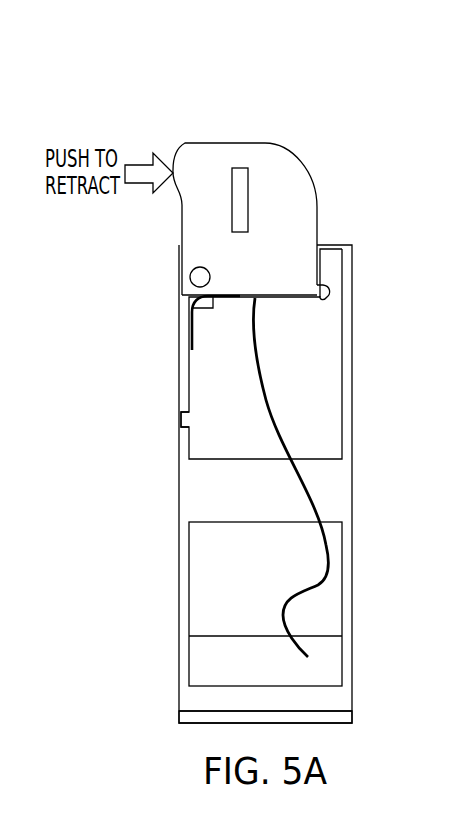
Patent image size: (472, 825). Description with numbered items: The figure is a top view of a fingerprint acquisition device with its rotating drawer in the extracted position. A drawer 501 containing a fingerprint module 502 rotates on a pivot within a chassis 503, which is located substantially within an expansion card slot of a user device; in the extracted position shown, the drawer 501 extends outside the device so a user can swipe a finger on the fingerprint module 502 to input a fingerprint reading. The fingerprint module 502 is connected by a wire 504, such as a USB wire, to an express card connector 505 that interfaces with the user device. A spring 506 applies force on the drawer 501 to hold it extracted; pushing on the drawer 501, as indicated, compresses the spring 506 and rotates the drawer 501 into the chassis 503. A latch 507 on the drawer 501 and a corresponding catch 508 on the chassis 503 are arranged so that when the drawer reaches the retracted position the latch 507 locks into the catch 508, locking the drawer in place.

The drawer 501 is at (303, 226).
The fingerprint module 502 is at (240, 200).
The chassis 503 is at (188, 505).
The wire 504 is at (262, 368).
The express card connector 505 is at (342, 717).
The spring 506 is at (189, 313).
The latch 507 is at (332, 295).
The catch 508 is at (180, 420).